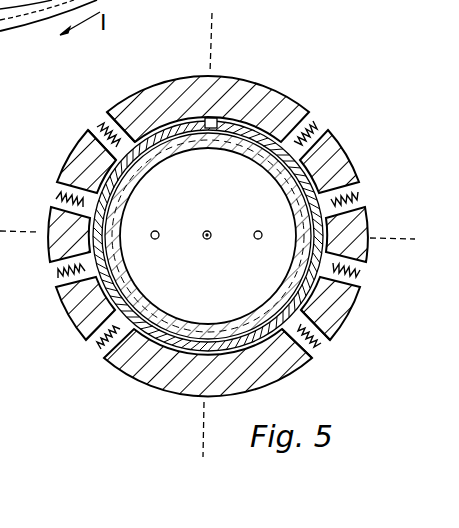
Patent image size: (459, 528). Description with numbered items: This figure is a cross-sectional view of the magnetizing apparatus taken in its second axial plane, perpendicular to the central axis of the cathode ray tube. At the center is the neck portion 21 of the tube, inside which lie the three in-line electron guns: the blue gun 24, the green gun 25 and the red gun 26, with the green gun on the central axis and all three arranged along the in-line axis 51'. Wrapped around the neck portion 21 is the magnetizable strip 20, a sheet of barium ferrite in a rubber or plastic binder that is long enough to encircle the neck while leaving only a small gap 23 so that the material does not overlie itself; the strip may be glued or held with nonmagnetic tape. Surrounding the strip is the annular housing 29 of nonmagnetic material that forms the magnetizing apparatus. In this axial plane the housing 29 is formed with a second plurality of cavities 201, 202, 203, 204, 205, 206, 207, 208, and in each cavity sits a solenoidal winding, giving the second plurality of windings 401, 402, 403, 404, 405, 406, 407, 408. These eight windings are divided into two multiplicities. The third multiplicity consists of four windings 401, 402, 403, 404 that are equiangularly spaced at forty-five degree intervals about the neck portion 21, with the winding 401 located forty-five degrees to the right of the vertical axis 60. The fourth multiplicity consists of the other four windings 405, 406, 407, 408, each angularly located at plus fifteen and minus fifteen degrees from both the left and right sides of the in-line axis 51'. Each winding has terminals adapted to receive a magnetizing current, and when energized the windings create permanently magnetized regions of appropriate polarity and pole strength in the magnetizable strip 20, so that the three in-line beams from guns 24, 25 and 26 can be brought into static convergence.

The magnetizable strip 20 is at (167, 133).
The neck portion 21 is at (260, 156).
The gap 23 is at (211, 128).
The blue gun 24 is at (155, 239).
The green gun 25 is at (210, 238).
The red gun 26 is at (255, 239).
The annular housing 29 is at (239, 80).
The in-line axis 51' is at (50, 236).
The vertical axis 60 is at (214, 48).
The cavity 201 is at (307, 118).
The cavity 202 is at (323, 340).
The cavity 203 is at (106, 357).
The cavity 204 is at (103, 133).
The cavity 205 is at (359, 184).
The cavity 206 is at (367, 259).
The cavity 207 is at (66, 286).
The cavity 208 is at (50, 181).
The winding 401 is at (320, 122).
The winding 402 is at (302, 345).
The winding 403 is at (96, 344).
The winding 404 is at (110, 125).
The winding 405 is at (356, 197).
The winding 406 is at (353, 271).
The winding 407 is at (62, 275).
The winding 408 is at (64, 199).